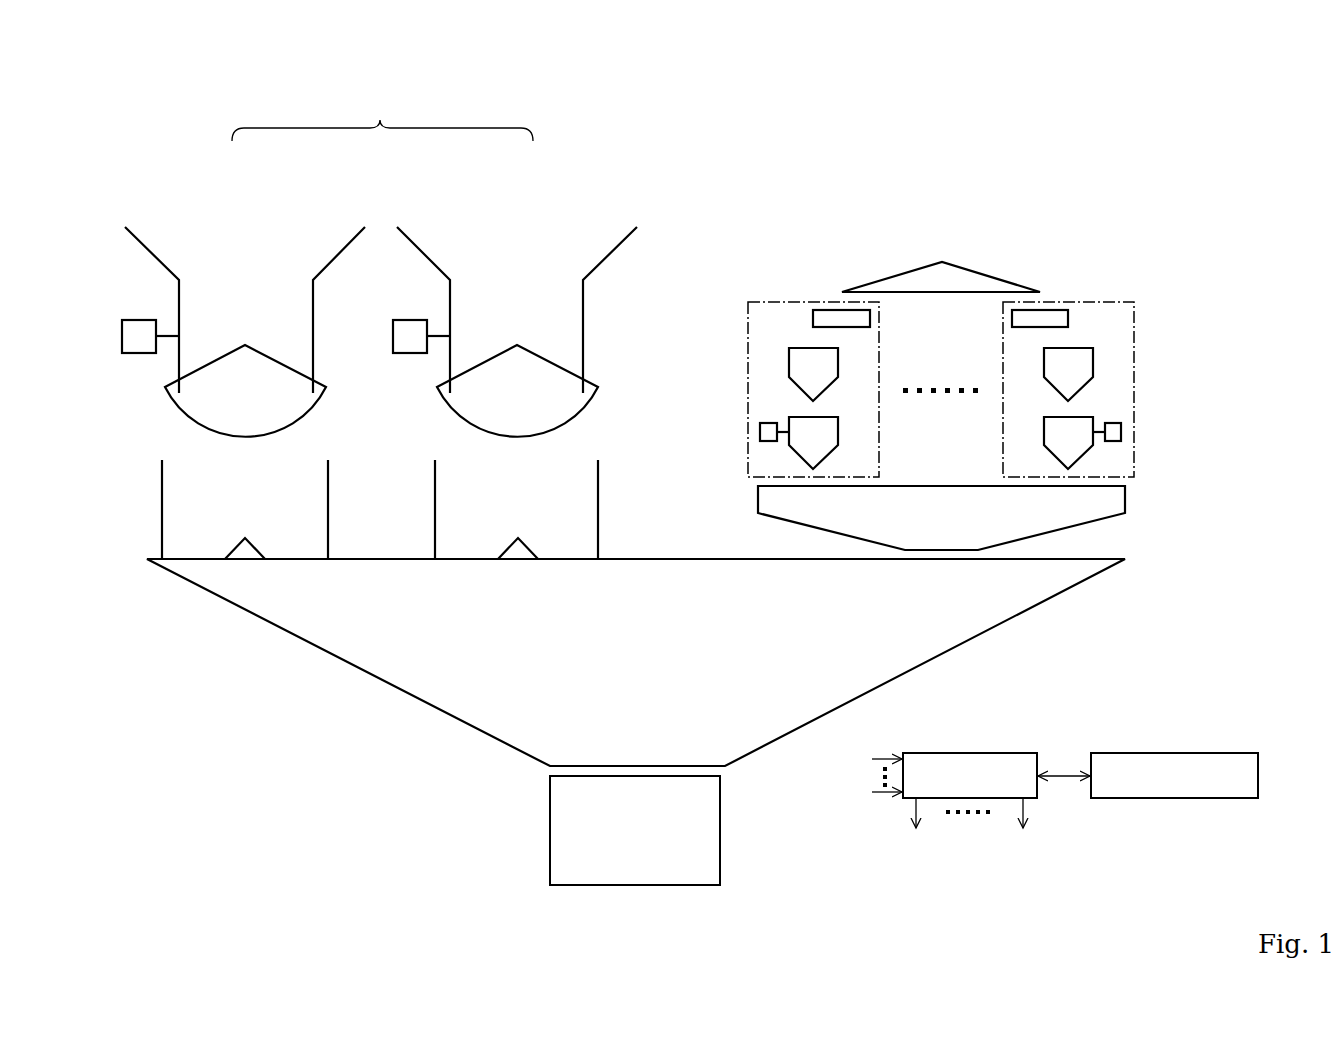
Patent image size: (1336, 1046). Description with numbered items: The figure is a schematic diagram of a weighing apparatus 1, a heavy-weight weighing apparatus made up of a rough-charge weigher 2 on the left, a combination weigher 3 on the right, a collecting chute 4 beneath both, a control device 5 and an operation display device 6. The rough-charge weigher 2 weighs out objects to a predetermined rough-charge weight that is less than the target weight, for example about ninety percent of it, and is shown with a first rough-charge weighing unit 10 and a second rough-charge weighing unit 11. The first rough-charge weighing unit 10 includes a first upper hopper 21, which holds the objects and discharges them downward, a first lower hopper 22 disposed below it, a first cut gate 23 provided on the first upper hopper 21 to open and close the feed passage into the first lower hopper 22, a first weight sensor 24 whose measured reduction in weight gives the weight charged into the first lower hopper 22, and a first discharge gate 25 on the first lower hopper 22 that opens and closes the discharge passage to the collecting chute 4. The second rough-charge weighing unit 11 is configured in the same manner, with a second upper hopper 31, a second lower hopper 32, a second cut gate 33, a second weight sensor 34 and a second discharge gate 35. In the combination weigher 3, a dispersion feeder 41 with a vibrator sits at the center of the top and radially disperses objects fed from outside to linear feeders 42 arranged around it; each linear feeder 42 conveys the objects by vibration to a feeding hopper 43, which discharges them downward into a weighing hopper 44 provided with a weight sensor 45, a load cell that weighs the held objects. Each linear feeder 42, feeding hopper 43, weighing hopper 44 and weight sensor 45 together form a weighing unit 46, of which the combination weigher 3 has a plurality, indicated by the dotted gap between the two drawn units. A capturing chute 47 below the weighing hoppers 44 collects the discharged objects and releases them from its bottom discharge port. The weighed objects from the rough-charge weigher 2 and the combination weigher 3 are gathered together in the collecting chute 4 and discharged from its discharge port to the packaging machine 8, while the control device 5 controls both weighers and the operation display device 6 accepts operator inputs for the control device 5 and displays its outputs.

The weighing apparatus 1 is at (1164, 152).
The rough-charge weigher 2 is at (382, 115).
The combination weigher 3 is at (945, 178).
The collecting chute 4 is at (436, 707).
The control device 5 is at (966, 752).
The operation display device 6 is at (1181, 752).
The packaging machine 8 is at (550, 856).
The first rough-charge weighing unit 10 is at (241, 238).
The second rough-charge weighing unit 11 is at (518, 238).
The first upper hopper 21 is at (179, 290).
The first lower hopper 22 is at (162, 486).
The first cut gate 23 is at (183, 411).
The first weight sensor 24 is at (122, 336).
The first discharge gate 25 is at (203, 562).
The second upper hopper 31 is at (450, 290).
The second lower hopper 32 is at (435, 486).
The second cut gate 33 is at (455, 411).
The second weight sensor 34 is at (393, 336).
The second discharge gate 35 is at (480, 562).
The dispersion feeder 41 is at (910, 270).
The linear feeder 42 is at (832, 309).
The feeding hopper 43 is at (789, 362).
The weighing hopper 44 is at (800, 457).
The weight sensor 45 is at (760, 430).
The weighing unit 46 is at (748, 314).
The capturing chute 47 is at (1098, 520).